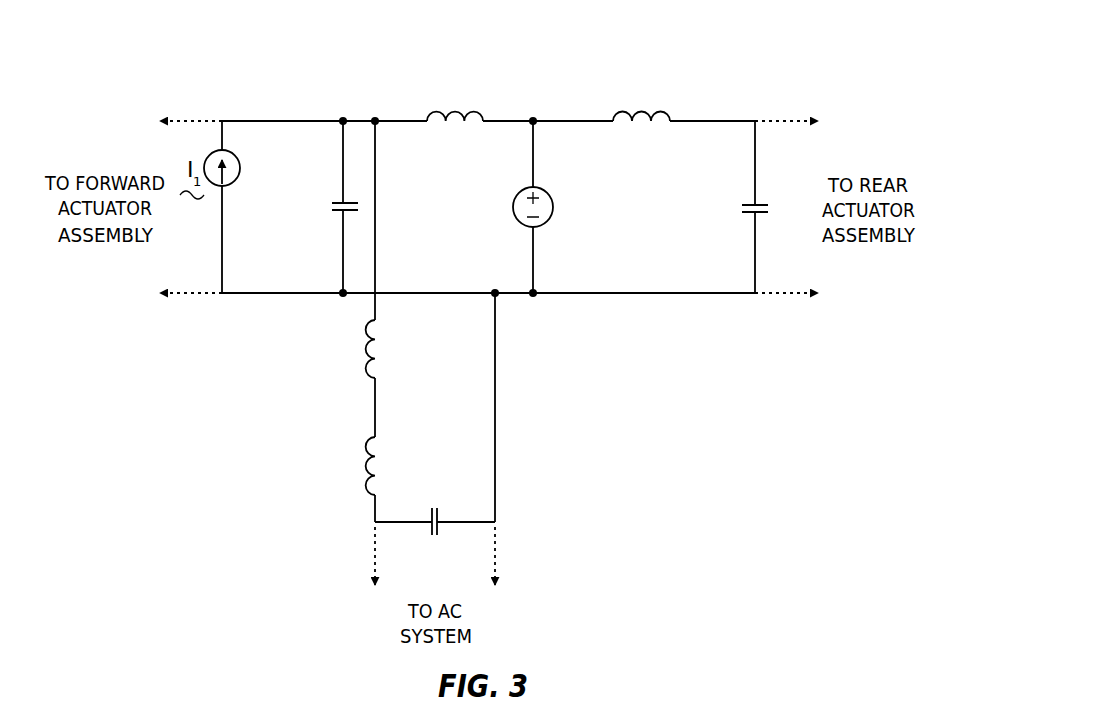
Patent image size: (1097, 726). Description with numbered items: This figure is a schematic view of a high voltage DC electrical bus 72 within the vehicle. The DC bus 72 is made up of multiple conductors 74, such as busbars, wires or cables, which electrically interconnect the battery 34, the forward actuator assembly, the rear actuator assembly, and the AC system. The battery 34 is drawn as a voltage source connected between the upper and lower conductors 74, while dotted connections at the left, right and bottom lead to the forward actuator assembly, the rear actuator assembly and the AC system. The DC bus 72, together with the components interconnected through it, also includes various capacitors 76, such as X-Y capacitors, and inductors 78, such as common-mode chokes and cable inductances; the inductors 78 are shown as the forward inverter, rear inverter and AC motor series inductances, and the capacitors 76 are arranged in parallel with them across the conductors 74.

The high voltage DC electrical bus 72 is at (442, 92).
The conductors 74 is at (520, 118).
The capacitors 76 is at (337, 217).
The inductors 78 is at (470, 112).
The battery 34 is at (548, 190).